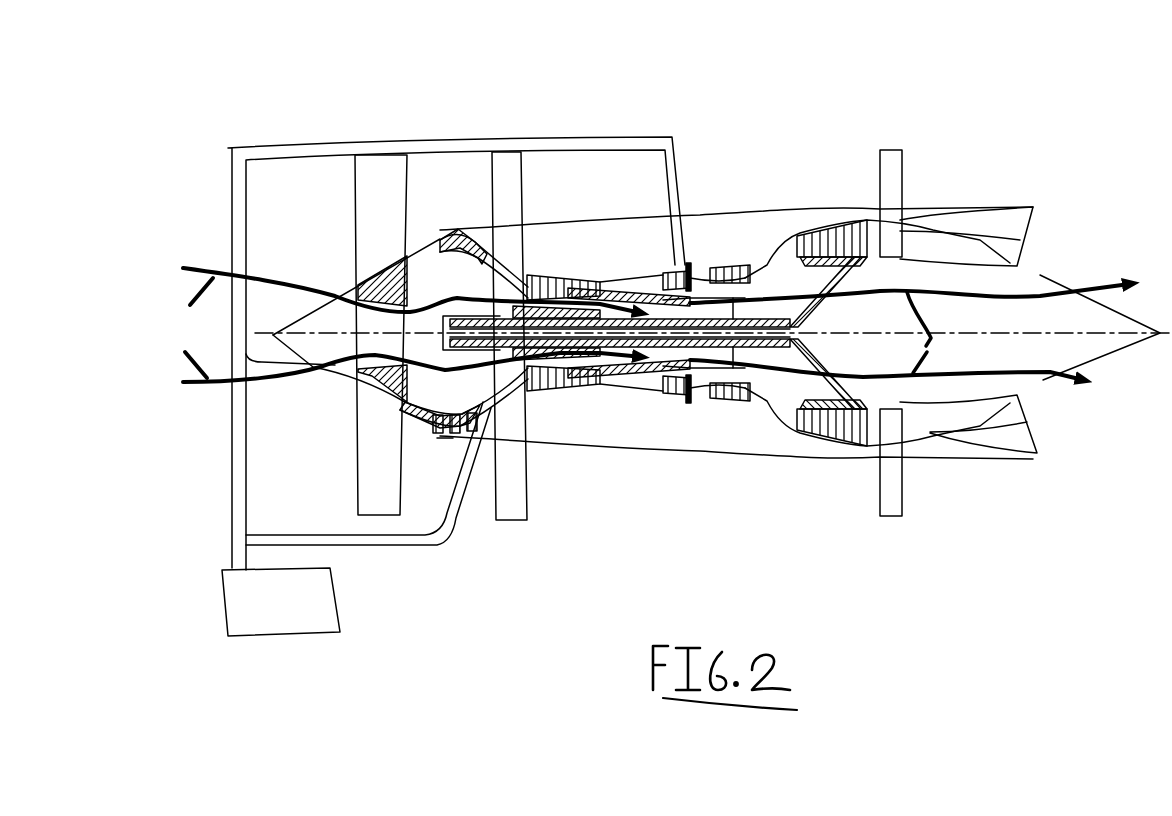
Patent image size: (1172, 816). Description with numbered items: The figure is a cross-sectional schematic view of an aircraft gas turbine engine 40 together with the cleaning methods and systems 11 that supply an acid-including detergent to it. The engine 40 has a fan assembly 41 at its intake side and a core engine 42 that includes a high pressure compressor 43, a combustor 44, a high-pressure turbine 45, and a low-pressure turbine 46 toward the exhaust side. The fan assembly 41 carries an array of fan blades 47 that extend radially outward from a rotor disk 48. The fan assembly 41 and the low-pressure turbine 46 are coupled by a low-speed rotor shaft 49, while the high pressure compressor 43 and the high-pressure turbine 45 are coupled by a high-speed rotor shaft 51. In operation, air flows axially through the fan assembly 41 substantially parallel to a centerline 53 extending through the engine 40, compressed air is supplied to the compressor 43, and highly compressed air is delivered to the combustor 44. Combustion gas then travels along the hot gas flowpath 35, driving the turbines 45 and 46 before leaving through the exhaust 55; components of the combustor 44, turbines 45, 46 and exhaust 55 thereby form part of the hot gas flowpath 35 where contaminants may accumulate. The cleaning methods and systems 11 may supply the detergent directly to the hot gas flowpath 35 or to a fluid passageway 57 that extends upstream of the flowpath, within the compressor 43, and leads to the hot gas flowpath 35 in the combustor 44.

The cleaning methods and systems 11 is at (285, 617).
The hot gas flowpath 35 is at (936, 332).
The aircraft gas turbine engine 40 is at (840, 92).
The fan assembly 41 is at (398, 127).
The core engine 42 is at (661, 258).
The high pressure compressor 43 is at (550, 259).
The combustor 44 is at (699, 265).
The high-pressure turbine 45 is at (750, 405).
The low-pressure turbine 46 is at (837, 460).
The fan blades 47 is at (381, 335).
The rotor disk 48 is at (334, 411).
The low-speed rotor shaft 49 is at (600, 368).
The high-speed rotor shaft 51 is at (549, 370).
The centerline 53 is at (1171, 368).
The exhaust 55 is at (990, 266).
The fluid passageway 57 is at (452, 203).